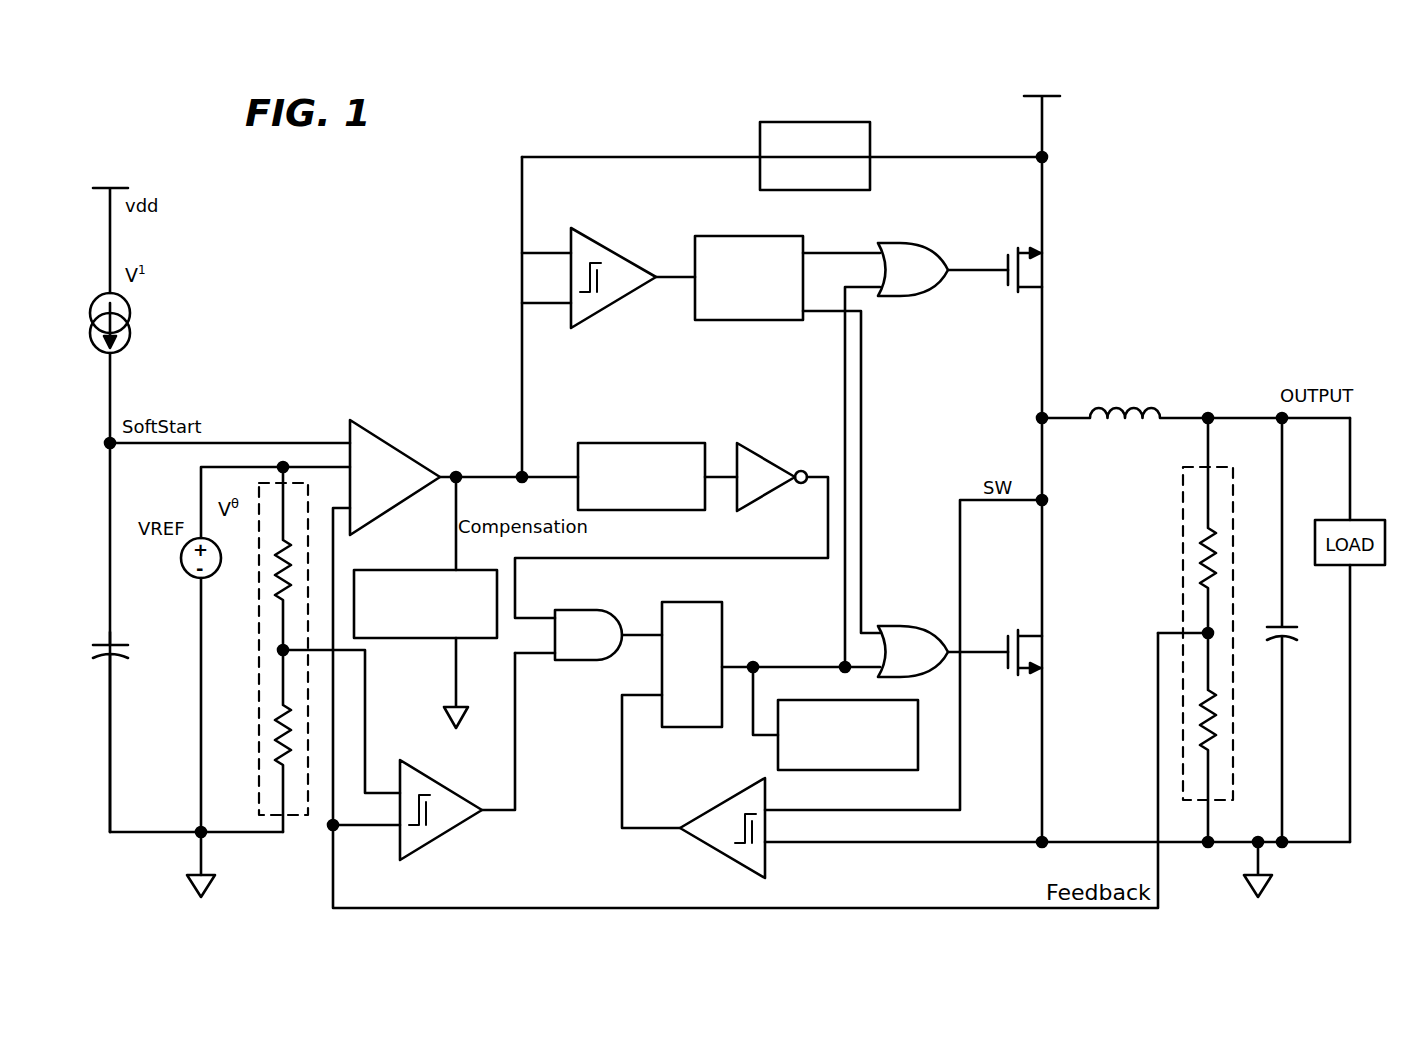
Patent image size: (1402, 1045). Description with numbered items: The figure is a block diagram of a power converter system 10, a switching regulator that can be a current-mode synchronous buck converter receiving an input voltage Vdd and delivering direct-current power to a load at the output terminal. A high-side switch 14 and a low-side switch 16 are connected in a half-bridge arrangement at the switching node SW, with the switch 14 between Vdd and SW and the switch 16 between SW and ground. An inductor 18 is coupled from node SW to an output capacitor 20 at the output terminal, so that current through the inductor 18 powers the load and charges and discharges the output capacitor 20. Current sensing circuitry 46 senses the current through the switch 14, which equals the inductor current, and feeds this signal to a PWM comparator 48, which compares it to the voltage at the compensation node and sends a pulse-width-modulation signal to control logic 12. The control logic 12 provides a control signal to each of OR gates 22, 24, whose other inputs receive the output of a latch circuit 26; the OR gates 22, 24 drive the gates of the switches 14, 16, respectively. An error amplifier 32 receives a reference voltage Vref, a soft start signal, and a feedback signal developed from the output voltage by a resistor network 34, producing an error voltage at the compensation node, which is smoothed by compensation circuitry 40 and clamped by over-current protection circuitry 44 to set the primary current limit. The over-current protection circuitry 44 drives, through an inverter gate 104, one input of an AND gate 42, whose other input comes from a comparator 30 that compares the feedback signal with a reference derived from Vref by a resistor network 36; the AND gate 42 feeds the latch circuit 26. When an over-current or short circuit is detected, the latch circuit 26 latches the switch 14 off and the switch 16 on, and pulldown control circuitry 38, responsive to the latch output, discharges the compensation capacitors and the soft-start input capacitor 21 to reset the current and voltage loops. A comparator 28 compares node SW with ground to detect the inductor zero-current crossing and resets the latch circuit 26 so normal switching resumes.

The power converter system 10 is at (1220, 139).
The control logic 12 is at (790, 236).
The high-side switch 14 is at (1032, 282).
The low-side switch 16 is at (1030, 645).
The inductor 18 is at (1118, 405).
The output capacitor 20 is at (1298, 640).
The input capacitor 21 is at (130, 658).
The OR gate 22 is at (897, 243).
The OR gate 24 is at (897, 626).
The latch circuit 26 is at (725, 622).
The comparator 28 is at (706, 800).
The comparator 30 is at (468, 828).
The error amplifier 32 is at (406, 458).
The resistor network 34 is at (1183, 490).
The resistor network 36 is at (305, 818).
The pulldown control circuitry 38 is at (845, 772).
The compensation circuitry 40 is at (444, 568).
The AND gate 42 is at (586, 662).
The over-current protection circuitry 44 is at (643, 443).
The current sensing circuitry 46 is at (805, 122).
The PWM comparator 48 is at (600, 243).
The inverter gate 104 is at (755, 505).